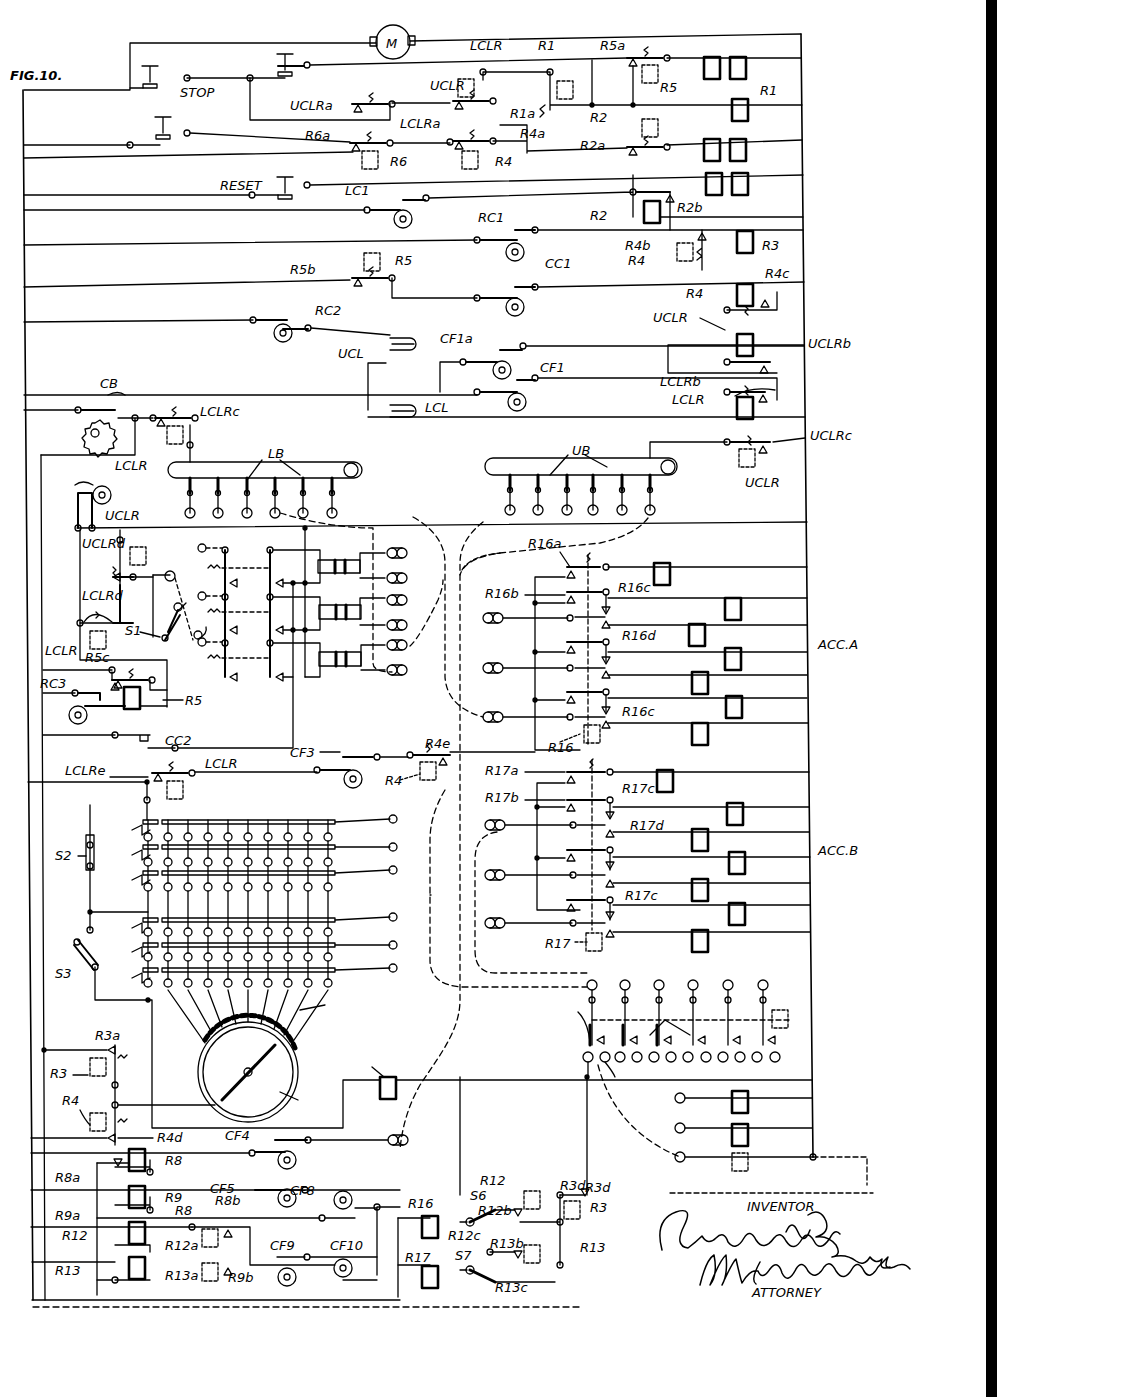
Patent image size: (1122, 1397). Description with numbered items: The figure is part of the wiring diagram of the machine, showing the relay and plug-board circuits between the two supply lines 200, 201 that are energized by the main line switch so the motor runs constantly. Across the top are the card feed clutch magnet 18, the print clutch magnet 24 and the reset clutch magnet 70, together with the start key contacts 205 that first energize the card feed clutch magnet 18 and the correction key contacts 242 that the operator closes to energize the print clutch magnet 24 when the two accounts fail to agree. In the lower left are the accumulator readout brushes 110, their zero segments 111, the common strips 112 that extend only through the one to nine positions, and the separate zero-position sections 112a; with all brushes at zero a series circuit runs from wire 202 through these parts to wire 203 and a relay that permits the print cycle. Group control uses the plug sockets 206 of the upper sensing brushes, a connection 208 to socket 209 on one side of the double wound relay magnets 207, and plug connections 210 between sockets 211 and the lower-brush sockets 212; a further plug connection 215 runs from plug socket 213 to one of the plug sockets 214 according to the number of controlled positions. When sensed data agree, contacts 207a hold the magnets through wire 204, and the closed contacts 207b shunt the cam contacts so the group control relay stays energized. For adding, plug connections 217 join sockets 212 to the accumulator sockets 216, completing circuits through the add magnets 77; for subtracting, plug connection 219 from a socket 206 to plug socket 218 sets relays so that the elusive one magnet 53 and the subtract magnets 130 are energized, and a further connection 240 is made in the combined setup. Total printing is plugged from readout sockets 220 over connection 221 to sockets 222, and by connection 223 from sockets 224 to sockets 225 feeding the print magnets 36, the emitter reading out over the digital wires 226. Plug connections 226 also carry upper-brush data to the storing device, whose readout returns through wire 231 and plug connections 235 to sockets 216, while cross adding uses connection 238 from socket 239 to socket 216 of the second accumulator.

The card feed clutch magnet 18 is at (744, 68).
The print clutch magnet 24 is at (712, 158).
The print magnet 36 is at (746, 1140).
The elusive one magnet 53 is at (670, 574).
The reset clutch magnet 70 is at (726, 197).
The add magnet 77 is at (736, 620).
The readout brush 110 is at (135, 955).
The zero segment 111 is at (253, 853).
The common strip 112 is at (338, 820).
The zero position section 112a is at (140, 812).
The subtract magnet 130 is at (700, 715).
The line 200 is at (25, 360).
The line 201 is at (806, 498).
The wire 202 is at (146, 787).
The wire 203 is at (152, 1062).
The wire 204 is at (164, 525).
The start key contacts 205 is at (310, 68).
The plug socket 206 is at (654, 506).
The double wound relay magnet 207 is at (348, 666).
The contacts 207a is at (280, 685).
The contacts 207b is at (233, 685).
The connection 208 is at (497, 565).
The socket 209 is at (446, 685).
The plug connection 210 is at (372, 540).
The socket 211 is at (397, 675).
The socket 212 is at (328, 499).
The plug socket 213 is at (172, 576).
The plug socket 214 is at (203, 647).
The plug connection 215 is at (172, 605).
The socket 216 is at (505, 688).
The plug connection 217 is at (437, 522).
The plug socket 218 is at (390, 1098).
The plug connection 219 is at (486, 524).
The socket 220 is at (445, 790).
The connection 221 is at (428, 895).
The socket 222 is at (600, 983).
The connection 223 is at (645, 1090).
The socket 224 is at (583, 1055).
The socket 225 is at (702, 1160).
The plug connection 226 is at (635, 534).
The wire 231 is at (42, 560).
The plug connection 235 is at (497, 938).
The connection 238 is at (513, 990).
The socket 239 is at (605, 1062).
The connection 240 is at (412, 1140).
The correction key contacts 242 is at (180, 142).